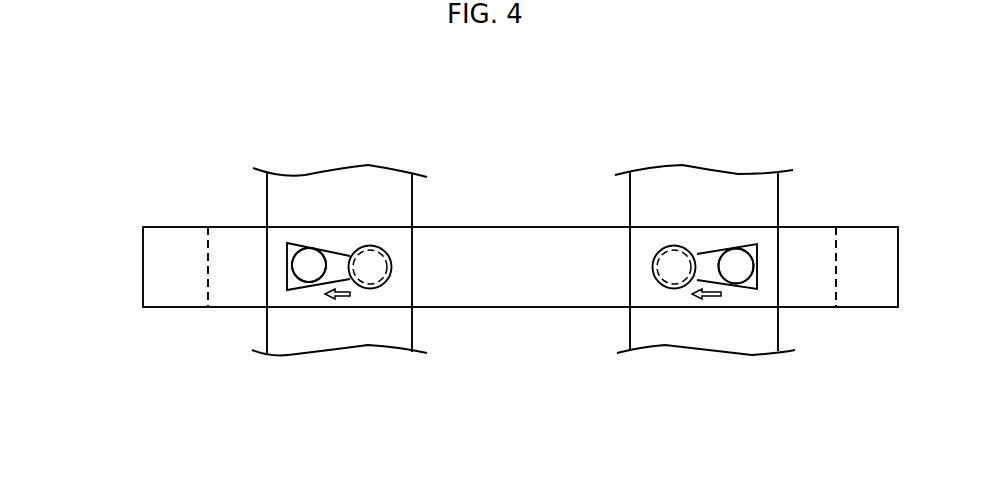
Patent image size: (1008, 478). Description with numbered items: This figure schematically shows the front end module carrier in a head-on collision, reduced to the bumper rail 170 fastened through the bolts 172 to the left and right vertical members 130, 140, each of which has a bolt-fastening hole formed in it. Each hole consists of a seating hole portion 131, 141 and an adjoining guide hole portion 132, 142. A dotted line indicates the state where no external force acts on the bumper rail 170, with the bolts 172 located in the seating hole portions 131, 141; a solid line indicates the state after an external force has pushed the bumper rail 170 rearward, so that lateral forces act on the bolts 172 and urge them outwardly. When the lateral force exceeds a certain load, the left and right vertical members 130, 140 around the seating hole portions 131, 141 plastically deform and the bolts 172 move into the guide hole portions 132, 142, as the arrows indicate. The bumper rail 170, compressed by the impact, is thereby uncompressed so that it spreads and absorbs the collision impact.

The bumper rail 170 is at (160, 275).
The right vertical member 140 is at (273, 333).
The left vertical member 130 is at (773, 332).
The seating hole portion 141 is at (367, 245).
The guide hole portion 142 is at (330, 250).
The seating hole portion 131 is at (672, 245).
The guide hole portion 132 is at (713, 250).
The bolt 172 is at (295, 265).